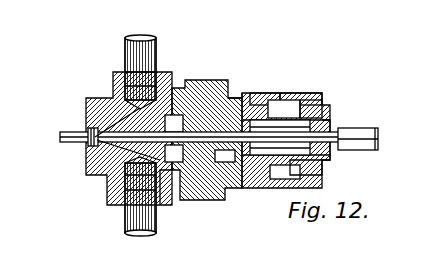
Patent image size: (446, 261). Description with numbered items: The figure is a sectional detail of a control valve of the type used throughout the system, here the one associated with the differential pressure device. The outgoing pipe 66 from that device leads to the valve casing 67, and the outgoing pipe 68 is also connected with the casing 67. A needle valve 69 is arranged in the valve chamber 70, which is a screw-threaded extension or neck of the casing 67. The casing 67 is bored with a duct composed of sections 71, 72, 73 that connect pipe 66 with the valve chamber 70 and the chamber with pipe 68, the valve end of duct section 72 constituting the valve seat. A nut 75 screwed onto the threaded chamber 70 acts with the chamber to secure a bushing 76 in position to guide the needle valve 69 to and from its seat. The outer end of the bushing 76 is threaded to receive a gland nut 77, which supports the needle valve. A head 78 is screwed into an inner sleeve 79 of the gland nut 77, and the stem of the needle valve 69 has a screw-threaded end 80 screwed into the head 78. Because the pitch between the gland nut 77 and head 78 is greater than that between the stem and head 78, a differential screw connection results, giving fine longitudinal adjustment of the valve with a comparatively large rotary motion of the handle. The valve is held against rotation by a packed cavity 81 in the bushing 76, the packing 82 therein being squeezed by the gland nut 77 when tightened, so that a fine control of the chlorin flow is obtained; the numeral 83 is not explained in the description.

The outgoing pipe 66 is at (124, 218).
The valve casing 67 is at (126, 137).
The outgoing pipe 68 is at (125, 52).
The needle valve 69 is at (185, 95).
The valve chamber 70 is at (170, 178).
The duct section 71 is at (100, 142).
The duct section 72 is at (90, 142).
The duct section 73 is at (95, 131).
The nut 75 is at (228, 100).
The bushing 76 is at (250, 100).
The gland nut 77 is at (300, 97).
The head 78 is at (337, 150).
The inner sleeve 79 is at (308, 170).
The screw-threaded end 80 is at (341, 126).
The packed cavity 81 is at (260, 178).
The packing 82 is at (310, 59).
The upper chamber 83 is at (280, 95).